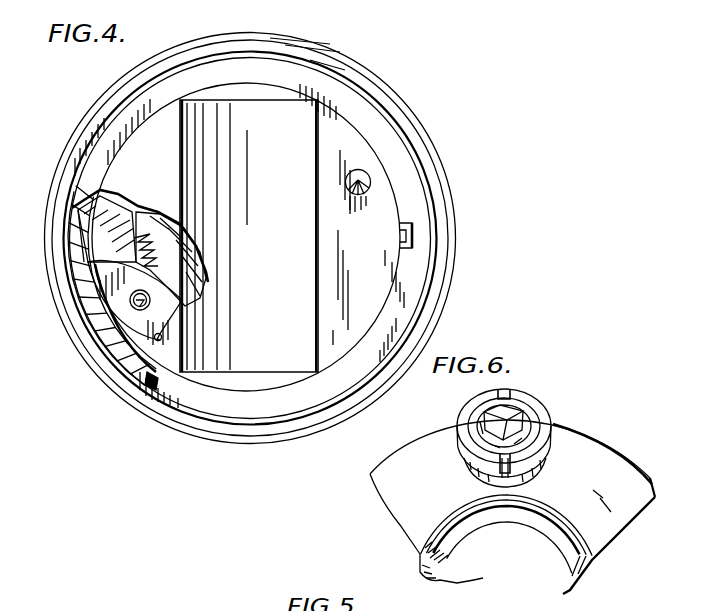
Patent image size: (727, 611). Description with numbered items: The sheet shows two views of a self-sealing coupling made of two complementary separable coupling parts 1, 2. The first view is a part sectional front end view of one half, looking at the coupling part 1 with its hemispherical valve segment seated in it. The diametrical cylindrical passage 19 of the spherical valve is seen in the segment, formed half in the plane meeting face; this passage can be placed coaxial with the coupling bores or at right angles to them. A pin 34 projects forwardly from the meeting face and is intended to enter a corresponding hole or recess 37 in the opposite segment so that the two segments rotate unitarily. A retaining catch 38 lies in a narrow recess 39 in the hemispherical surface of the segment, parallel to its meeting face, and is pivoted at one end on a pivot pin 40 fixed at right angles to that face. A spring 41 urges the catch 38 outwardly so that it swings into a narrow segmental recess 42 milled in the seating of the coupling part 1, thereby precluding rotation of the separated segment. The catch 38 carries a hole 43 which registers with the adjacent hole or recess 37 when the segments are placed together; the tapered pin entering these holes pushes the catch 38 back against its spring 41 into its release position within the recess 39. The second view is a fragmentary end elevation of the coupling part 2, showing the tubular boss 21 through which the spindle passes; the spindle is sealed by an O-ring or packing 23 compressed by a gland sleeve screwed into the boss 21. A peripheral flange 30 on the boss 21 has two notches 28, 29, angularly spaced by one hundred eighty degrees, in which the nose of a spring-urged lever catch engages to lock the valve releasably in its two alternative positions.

In FIG. 4, the coupling part 1 is at (429, 121).
In FIG. 4, the diametrical cylindrical passage 19 is at (290, 139).
In FIG. 4, the pin 34 is at (364, 202).
In FIG. 4, the spring 41 is at (148, 238).
In FIG. 4, the narrow recess 39 is at (164, 292).
In FIG. 4, the segmental recess 42 is at (92, 262).
In FIG. 4, the retaining catch 38 is at (128, 290).
In FIG. 4, the hole 43 is at (126, 320).
In FIG. 4, the hole or recess 37 is at (138, 337).
In FIG. 4, the pivot pin 40 is at (152, 384).
In FIG. 6, the coupling part 2 is at (586, 453).
In FIG. 6, the notch 28 is at (510, 393).
In FIG. 6, the peripheral flange 30 is at (540, 407).
In FIG. 6, the O-ring or packing 23 is at (525, 430).
In FIG. 6, the tubular boss 21 is at (480, 472).
In FIG. 6, the notch 29 is at (508, 462).